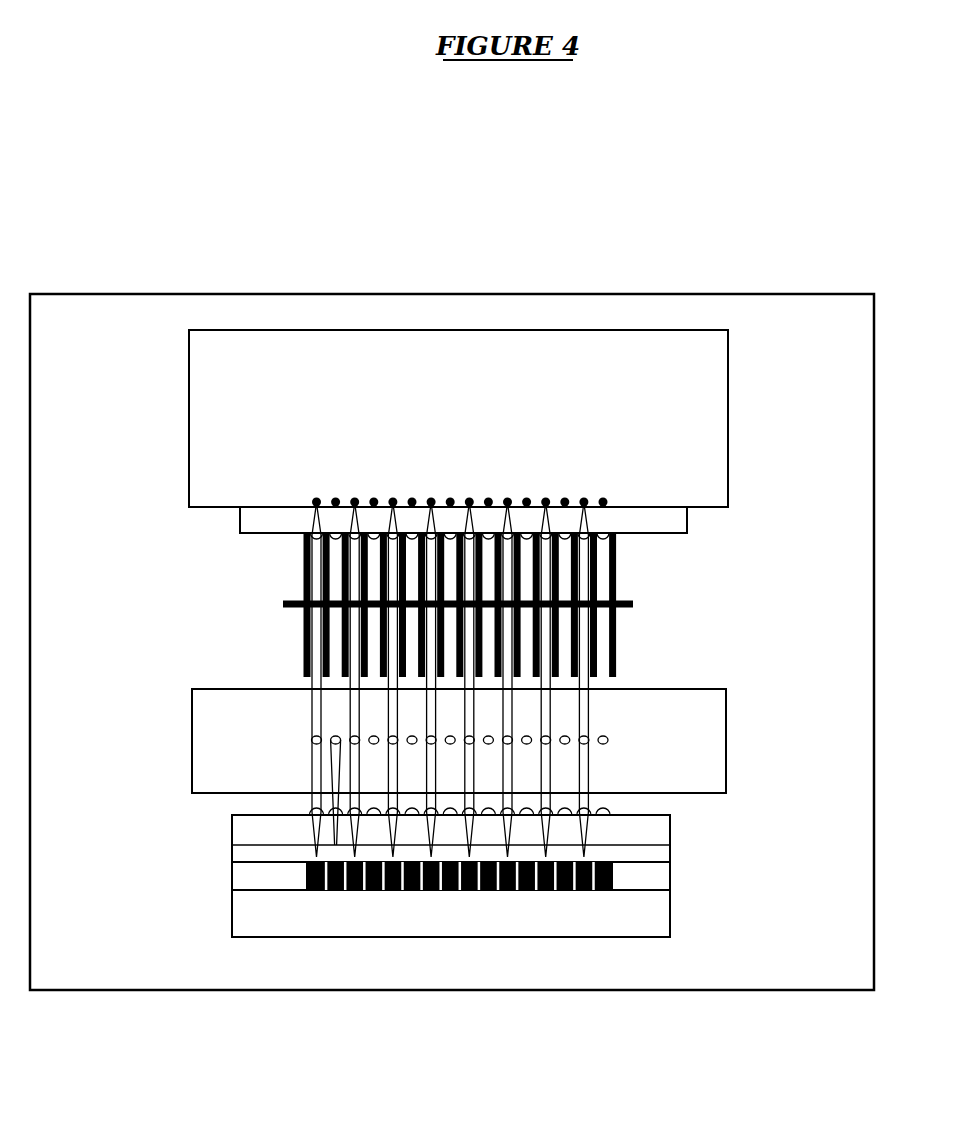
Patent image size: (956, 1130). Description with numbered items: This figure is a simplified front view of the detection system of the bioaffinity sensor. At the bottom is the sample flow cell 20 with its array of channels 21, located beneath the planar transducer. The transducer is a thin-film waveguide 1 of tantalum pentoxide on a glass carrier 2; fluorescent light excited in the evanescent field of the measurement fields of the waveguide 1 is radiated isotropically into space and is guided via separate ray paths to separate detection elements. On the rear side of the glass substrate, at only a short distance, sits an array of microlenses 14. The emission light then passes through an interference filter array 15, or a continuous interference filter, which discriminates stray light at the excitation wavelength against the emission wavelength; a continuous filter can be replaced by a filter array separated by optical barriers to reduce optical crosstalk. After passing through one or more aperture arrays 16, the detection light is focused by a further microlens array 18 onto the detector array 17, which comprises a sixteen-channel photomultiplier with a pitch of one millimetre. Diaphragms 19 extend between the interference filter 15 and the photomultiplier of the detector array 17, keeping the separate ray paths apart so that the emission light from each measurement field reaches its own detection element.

The thin-film waveguide 1 is at (675, 860).
The glass carrier 2 is at (232, 845).
The array of microlenses 14 is at (625, 808).
The interference filter array 15 is at (637, 747).
The aperture array 16 is at (637, 603).
The detector array 17 is at (607, 480).
The further microlens array 18 is at (620, 530).
The diaphragms 19 is at (617, 653).
The sample flow cell 20 is at (645, 922).
The array of channels 21 is at (615, 870).